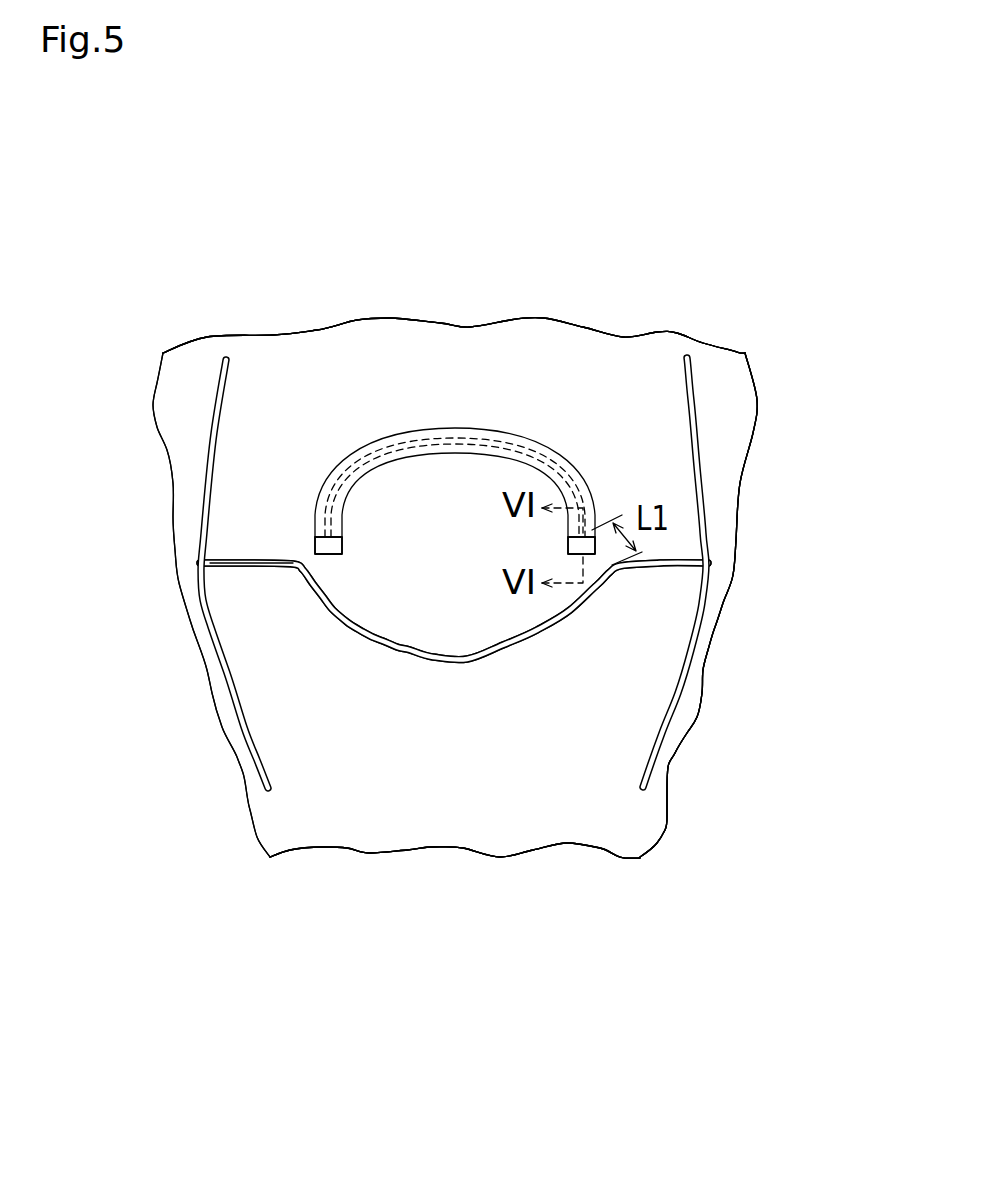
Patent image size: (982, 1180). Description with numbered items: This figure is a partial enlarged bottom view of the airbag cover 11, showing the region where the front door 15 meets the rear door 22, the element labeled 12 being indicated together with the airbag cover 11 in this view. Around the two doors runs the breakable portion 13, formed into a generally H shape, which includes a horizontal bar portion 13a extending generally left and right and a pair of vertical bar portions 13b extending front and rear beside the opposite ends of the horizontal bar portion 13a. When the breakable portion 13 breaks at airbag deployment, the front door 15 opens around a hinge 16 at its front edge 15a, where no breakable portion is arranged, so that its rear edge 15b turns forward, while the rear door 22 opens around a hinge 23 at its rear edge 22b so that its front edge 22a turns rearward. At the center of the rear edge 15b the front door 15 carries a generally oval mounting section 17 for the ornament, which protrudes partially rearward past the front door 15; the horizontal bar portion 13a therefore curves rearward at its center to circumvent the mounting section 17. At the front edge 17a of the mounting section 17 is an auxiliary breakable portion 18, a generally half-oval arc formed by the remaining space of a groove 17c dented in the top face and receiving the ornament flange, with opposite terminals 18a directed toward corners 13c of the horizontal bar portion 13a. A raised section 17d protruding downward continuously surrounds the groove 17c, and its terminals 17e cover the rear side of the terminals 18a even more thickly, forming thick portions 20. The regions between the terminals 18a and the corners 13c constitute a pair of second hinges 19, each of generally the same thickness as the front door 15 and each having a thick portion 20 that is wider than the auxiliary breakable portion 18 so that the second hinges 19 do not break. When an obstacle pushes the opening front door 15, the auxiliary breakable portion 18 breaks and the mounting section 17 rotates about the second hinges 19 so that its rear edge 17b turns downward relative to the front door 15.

The airbag cover 11 is at (460, 524).
The roof panel 12 is at (677, 322).
The breakable portion 13 is at (450, 671).
The horizontal bar portion 13a is at (381, 643).
The vertical bar portions 13b is at (257, 765).
The corners 13c is at (207, 534).
The front door 15 is at (229, 464).
The front edge 15a is at (283, 360).
The rear edge 15b is at (263, 555).
The hinge 16 is at (442, 347).
The mounting section 17 is at (456, 561).
The front edge 17a is at (451, 444).
The rear edge 17b is at (328, 547).
The groove 17c is at (400, 457).
The raised section 17d is at (442, 438).
The terminals 17e is at (604, 566).
The auxiliary breakable portion 18 is at (455, 514).
The terminals 18a is at (313, 510).
The second hinges 19 is at (334, 574).
The thick portion 20 is at (455, 545).
The rear door 22 is at (274, 746).
The front edge 22a is at (680, 590).
The rear edge 22b is at (627, 763).
The hinge 23 is at (525, 805).